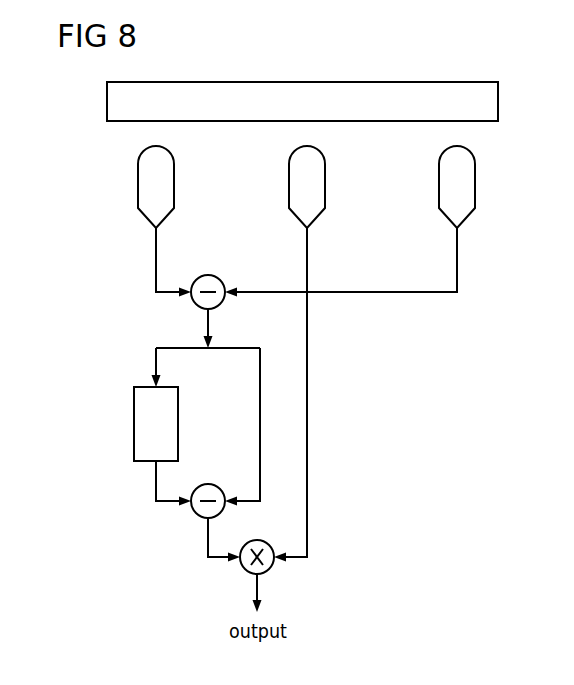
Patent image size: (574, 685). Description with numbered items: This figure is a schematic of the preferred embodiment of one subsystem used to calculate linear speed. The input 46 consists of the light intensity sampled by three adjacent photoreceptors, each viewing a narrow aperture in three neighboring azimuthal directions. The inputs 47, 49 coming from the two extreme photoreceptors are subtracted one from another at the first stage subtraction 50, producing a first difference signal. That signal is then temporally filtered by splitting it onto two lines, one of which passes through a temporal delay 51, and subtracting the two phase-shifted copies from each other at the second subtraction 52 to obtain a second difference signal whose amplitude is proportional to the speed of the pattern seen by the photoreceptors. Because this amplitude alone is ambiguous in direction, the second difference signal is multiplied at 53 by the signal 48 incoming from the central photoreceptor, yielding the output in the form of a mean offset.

The input 46 is at (107, 100).
The input from photoreceptor o1 47 is at (138, 186).
The signal from central photoreceptor o2 48 is at (289, 186).
The input from photoreceptor o3 49 is at (439, 186).
The first stage subtraction 50 is at (196, 304).
The temporal delay τ 51 is at (134, 425).
The second stage subtraction 52 is at (196, 513).
The multiplication 53 is at (245, 569).